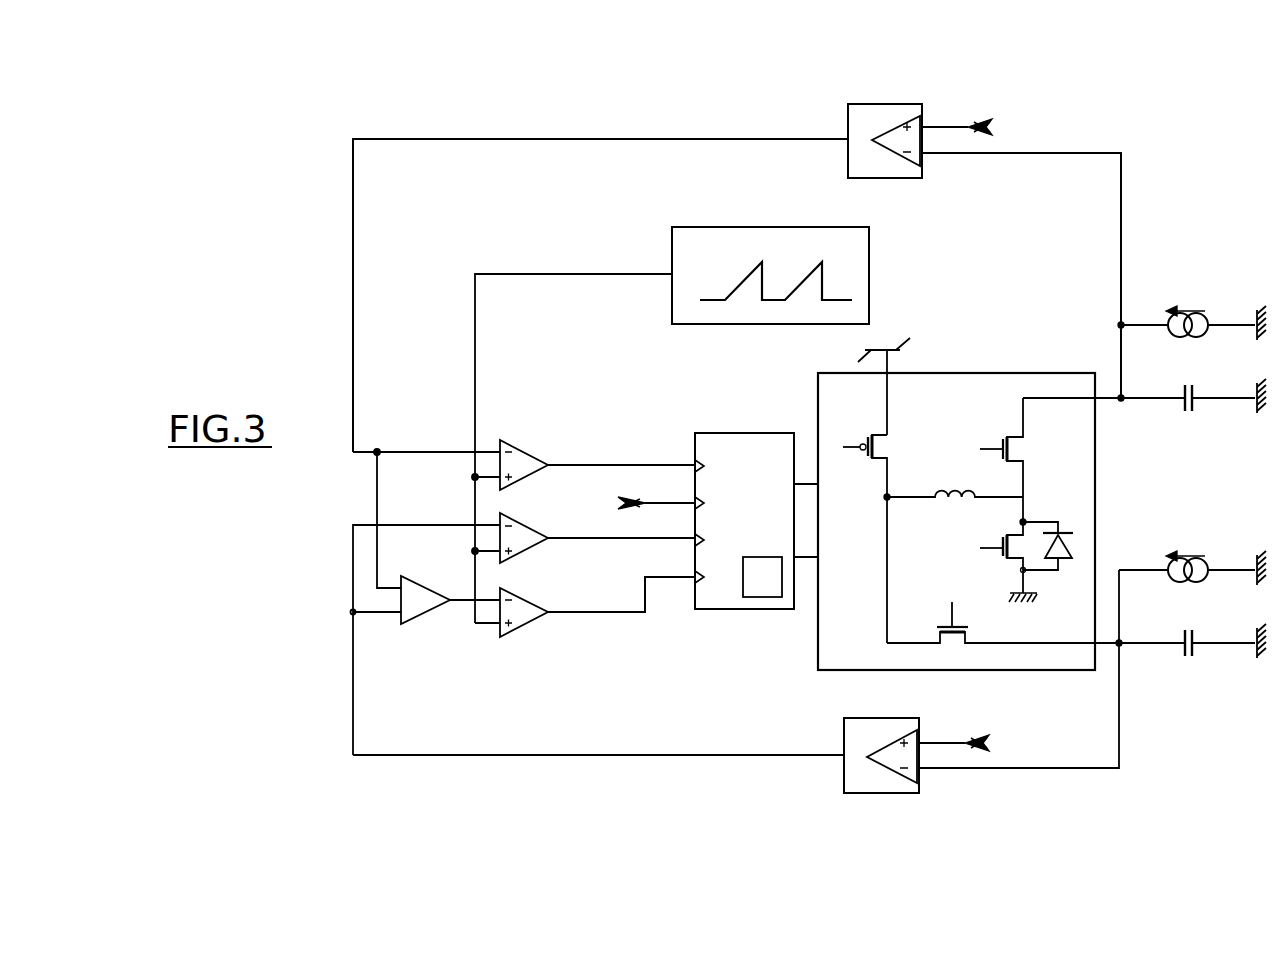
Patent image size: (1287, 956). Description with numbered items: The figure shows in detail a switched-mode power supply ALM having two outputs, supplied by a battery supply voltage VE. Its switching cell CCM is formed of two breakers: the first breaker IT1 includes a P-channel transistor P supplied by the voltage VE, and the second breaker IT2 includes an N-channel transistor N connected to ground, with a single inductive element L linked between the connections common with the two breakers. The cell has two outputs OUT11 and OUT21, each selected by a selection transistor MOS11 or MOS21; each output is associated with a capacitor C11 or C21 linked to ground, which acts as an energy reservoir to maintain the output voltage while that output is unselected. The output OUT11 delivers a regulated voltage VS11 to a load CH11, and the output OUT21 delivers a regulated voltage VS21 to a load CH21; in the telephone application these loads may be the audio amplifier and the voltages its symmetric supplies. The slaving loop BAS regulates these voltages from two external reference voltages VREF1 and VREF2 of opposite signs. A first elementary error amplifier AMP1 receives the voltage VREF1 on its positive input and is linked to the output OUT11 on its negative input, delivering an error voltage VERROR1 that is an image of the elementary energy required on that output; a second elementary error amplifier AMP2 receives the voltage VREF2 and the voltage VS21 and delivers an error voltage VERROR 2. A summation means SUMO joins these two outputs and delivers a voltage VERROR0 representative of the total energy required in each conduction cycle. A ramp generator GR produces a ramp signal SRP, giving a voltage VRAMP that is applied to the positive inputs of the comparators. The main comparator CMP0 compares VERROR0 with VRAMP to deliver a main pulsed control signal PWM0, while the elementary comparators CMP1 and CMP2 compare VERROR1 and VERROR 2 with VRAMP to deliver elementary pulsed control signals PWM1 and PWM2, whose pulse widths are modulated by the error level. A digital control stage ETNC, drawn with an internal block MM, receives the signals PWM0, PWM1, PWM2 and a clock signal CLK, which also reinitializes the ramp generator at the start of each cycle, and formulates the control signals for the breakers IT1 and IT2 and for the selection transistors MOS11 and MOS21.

The slaving loop BAS is at (402, 126).
The error voltage VERROR 2 is at (600, 126).
The second elementary error amplifier AMP2 is at (890, 104).
The external reference voltage VREF2 is at (989, 128).
The switched-mode power supply ALM is at (1183, 232).
The ramp generator GR is at (869, 277).
The ramp signal SRP is at (734, 285).
The ramp voltage VRAMP is at (573, 261).
The summation means SUMO is at (428, 581).
The error voltage VERROR0 is at (462, 604).
The elementary comparator CMP2 is at (542, 446).
The elementary pulsed control signal PWM2 is at (622, 463).
The elementary comparator CMP1 is at (537, 525).
The elementary pulsed control signal PWM1 is at (612, 541).
The main comparator CMP0 is at (537, 600).
The main pulsed control signal PWM0 is at (596, 615).
The clock signal CLK is at (636, 502).
The digital control stage ETNC is at (744, 521).
The memory MM is at (762, 577).
The switching cell CCM is at (957, 350).
The supply voltage VE is at (884, 383).
The breaker IT1 is at (856, 418).
The P-channel field-effect transistor P is at (865, 434).
The inductive element L is at (955, 480).
The selection transistor MOS21 is at (984, 460).
The breaker IT2 is at (1040, 508).
The N-channel insulated-gate field-effect transistor N is at (1003, 563).
The selection transistor MOS11 is at (1036, 622).
The regulated voltage VS21 is at (1187, 303).
The load CH21 is at (1193, 334).
The capacitor C21 is at (1219, 410).
The output OUT21 is at (1123, 401).
The regulated voltage VS11 is at (1185, 547).
The load CH11 is at (1192, 579).
The capacitor C11 is at (1218, 652).
The output OUT11 is at (1121, 646).
The first elementary error amplifier AMP1 is at (880, 795).
The external reference voltage VREF1 is at (986, 744).
The error voltage VERROR1 is at (598, 770).